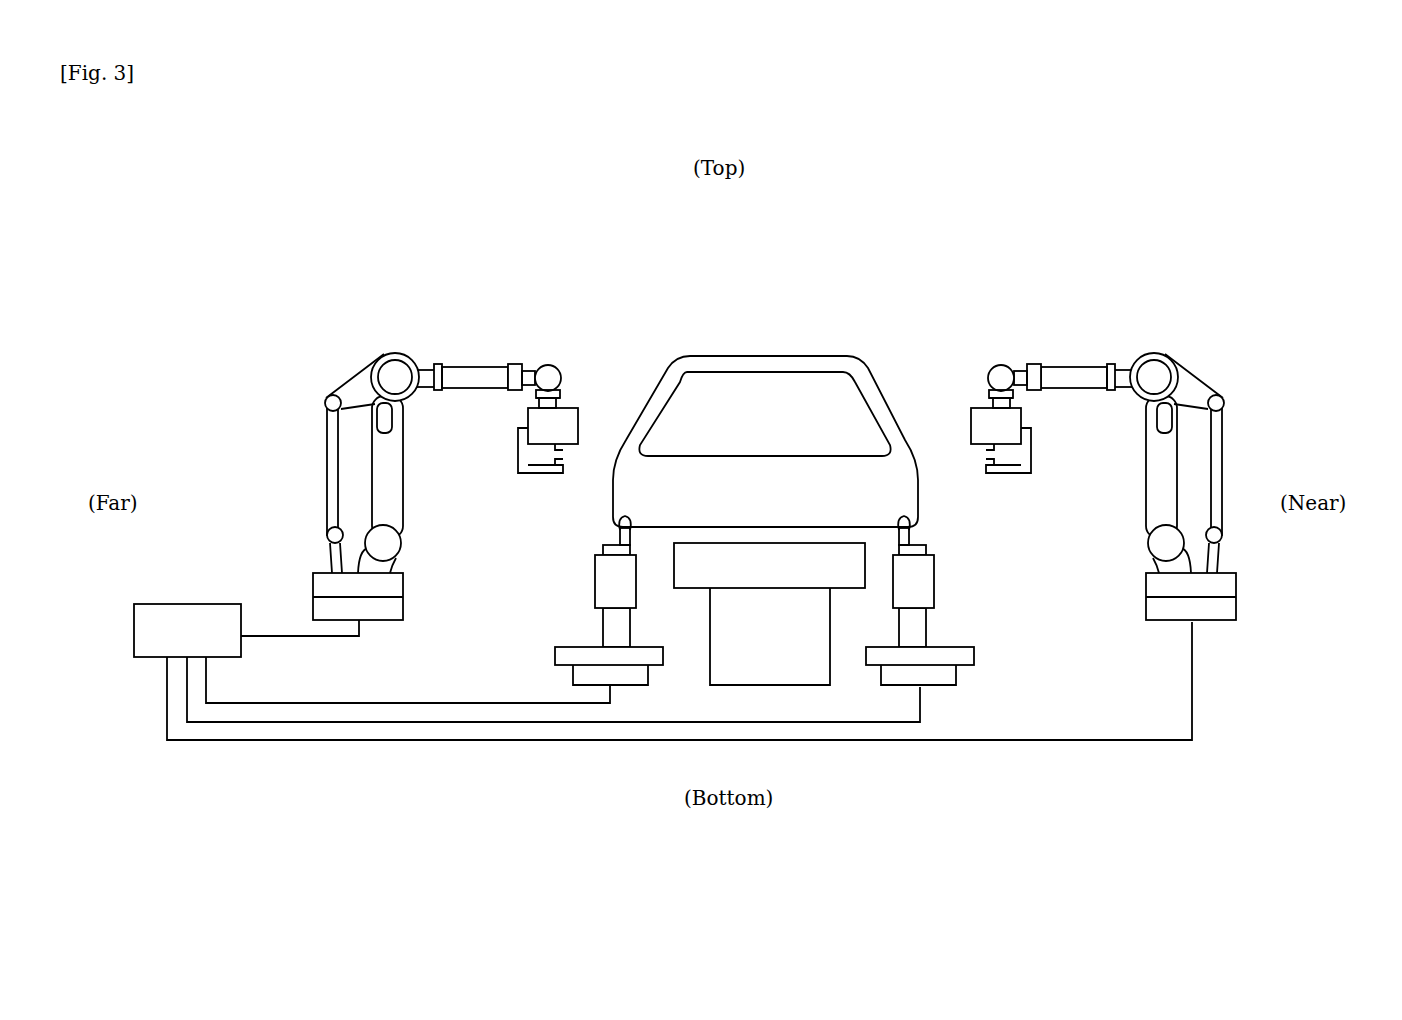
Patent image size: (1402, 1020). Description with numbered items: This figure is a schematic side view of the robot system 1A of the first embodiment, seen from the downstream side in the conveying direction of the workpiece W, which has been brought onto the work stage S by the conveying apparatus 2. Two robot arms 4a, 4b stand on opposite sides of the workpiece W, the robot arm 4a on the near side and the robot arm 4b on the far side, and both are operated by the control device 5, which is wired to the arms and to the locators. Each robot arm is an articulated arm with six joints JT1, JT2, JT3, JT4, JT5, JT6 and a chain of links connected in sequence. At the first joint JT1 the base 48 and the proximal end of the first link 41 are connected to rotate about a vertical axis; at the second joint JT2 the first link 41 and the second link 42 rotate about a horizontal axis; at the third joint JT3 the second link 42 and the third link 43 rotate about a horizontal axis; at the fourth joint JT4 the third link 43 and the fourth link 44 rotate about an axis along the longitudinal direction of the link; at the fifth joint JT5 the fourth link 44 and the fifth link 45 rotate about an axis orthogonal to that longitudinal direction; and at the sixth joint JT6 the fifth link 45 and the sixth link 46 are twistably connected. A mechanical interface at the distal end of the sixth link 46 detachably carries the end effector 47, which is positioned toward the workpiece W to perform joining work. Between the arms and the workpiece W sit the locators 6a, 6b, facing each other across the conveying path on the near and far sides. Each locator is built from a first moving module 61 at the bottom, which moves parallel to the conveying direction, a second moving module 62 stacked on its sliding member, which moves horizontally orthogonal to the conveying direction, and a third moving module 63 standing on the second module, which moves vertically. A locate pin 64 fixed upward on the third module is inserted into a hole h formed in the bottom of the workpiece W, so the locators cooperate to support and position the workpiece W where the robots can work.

The robot system 1A is at (1106, 230).
The work stage S is at (596, 226).
The workpiece W is at (767, 356).
The conveying apparatus 2 is at (843, 589).
The robot arm 4a is at (1227, 383).
The robot arm 4b is at (313, 383).
The control device 5 is at (187, 604).
The locator 6a is at (950, 558).
The locator 6b is at (585, 558).
The hole h is at (619, 528).
The first link 41 is at (392, 568).
The second link 42 is at (404, 468).
The third link 43 is at (426, 366).
The fourth link 44 is at (528, 365).
The fifth link 45 is at (561, 394).
The sixth link 46 is at (538, 404).
The end effector 47 is at (518, 459).
The base 48 is at (392, 611).
The first moving module 61 is at (574, 676).
The second moving module 62 is at (556, 655).
The third moving module 63 is at (595, 585).
The locate pin 64 is at (614, 520).
The first joint JT1 is at (390, 585).
The second joint JT2 is at (390, 543).
The third joint JT3 is at (388, 370).
The fourth joint JT4 is at (516, 366).
The fifth joint JT5 is at (552, 372).
The sixth joint JT6 is at (560, 399).